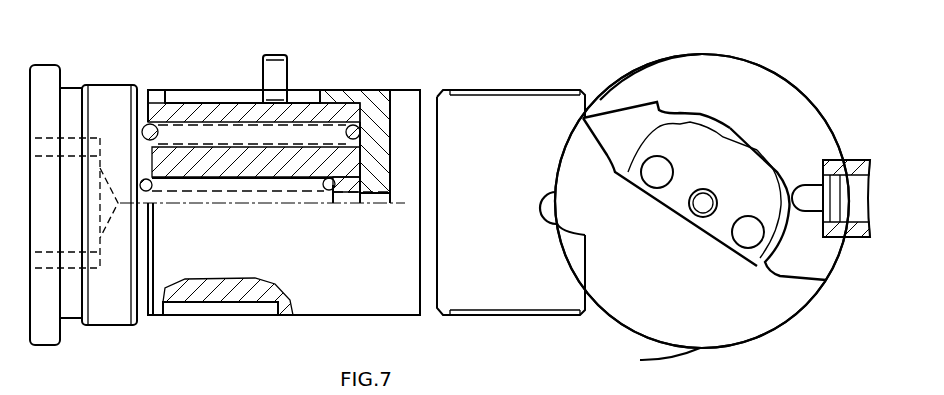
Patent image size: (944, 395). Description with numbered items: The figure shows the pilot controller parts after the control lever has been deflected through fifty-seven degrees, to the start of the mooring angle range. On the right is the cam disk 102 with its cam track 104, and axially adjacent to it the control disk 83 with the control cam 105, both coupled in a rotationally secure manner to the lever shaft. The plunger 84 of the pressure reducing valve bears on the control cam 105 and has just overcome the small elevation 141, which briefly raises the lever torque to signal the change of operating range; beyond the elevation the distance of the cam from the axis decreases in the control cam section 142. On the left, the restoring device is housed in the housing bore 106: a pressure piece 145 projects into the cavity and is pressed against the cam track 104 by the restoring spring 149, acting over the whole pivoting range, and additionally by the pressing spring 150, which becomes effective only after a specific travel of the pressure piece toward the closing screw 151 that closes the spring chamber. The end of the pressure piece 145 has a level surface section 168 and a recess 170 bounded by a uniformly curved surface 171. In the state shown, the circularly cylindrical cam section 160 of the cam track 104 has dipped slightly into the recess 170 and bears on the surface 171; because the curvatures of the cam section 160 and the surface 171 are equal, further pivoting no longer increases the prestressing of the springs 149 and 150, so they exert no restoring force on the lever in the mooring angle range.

The control disk 83 is at (640, 127).
The plunger 84 is at (855, 240).
The cam disk 102 is at (713, 83).
The cam track 104 is at (795, 62).
The control cam 105 is at (757, 150).
The housing bore 106 is at (666, 371).
The elevation 141 is at (799, 190).
The control cam section 142 is at (780, 247).
The pressure piece 145 is at (310, 277).
The restoring spring 149 is at (194, 133).
The pressing spring 150 is at (218, 187).
The closing screw 151 is at (107, 292).
The cam section 160 is at (665, 58).
The surface section 168 is at (597, 152).
The recess 170 is at (584, 206).
The curved surface 171 is at (570, 174).